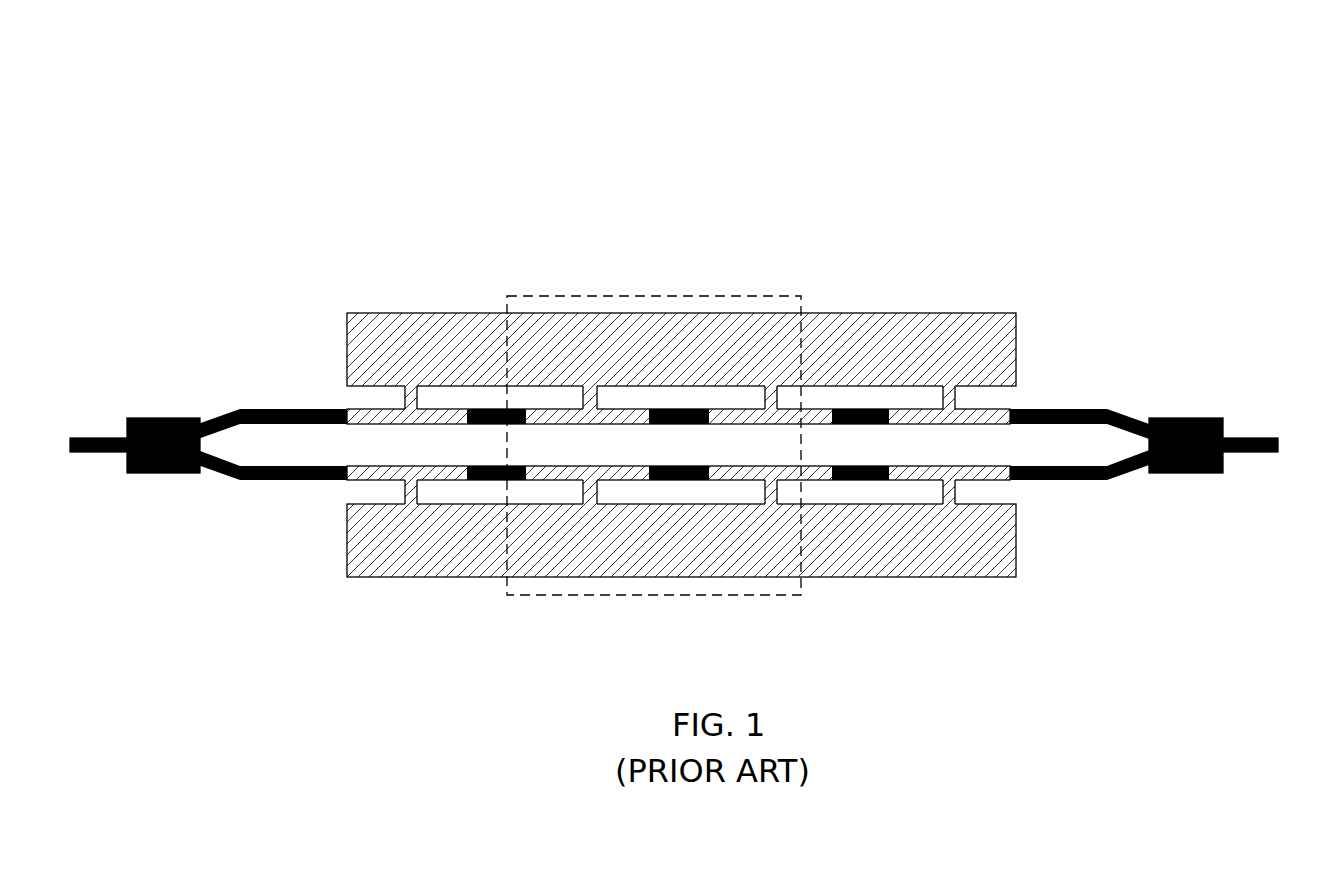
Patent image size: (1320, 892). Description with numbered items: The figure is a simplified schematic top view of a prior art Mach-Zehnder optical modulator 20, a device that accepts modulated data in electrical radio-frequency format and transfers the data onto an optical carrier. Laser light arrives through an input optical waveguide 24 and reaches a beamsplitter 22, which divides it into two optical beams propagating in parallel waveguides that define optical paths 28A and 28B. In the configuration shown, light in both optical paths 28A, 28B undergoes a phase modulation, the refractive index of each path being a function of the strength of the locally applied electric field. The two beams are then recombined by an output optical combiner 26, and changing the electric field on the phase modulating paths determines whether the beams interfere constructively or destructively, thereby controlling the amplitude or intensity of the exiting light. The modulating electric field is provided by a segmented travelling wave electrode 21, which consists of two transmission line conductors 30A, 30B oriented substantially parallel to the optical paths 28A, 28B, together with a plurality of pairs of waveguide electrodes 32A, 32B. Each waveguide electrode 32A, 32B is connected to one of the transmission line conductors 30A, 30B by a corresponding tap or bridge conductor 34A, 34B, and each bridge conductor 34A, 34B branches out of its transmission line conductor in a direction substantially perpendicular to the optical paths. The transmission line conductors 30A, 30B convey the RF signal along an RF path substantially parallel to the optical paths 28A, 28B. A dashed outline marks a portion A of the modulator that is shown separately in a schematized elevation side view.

The Mach-Zehnder optical modulator 20 is at (558, 124).
The segmented travelling wave electrode 21 is at (1030, 297).
The beamsplitter 22 is at (178, 418).
The input optical waveguide 24 is at (98, 452).
The output optical combiner 26 is at (1180, 474).
The optical path 28A is at (1082, 408).
The optical path 28B is at (1067, 481).
The transmission line conductor 30A is at (468, 330).
The transmission line conductor 30B is at (492, 577).
The waveguide electrode 32A is at (412, 413).
The waveguide electrode 32B is at (410, 473).
The bridge conductor 34A is at (778, 397).
The bridge conductor 34B is at (777, 493).
The portion A is at (642, 595).